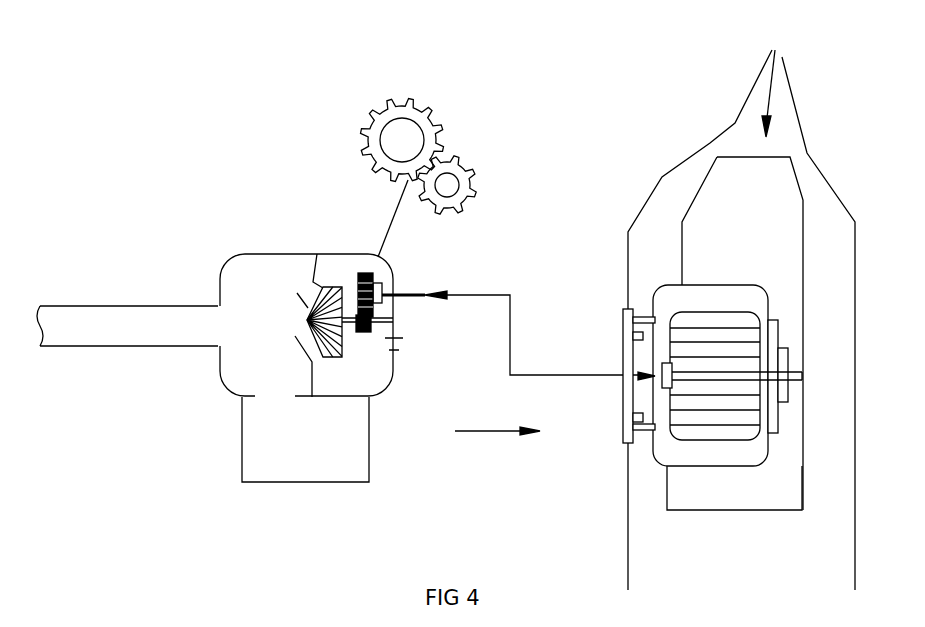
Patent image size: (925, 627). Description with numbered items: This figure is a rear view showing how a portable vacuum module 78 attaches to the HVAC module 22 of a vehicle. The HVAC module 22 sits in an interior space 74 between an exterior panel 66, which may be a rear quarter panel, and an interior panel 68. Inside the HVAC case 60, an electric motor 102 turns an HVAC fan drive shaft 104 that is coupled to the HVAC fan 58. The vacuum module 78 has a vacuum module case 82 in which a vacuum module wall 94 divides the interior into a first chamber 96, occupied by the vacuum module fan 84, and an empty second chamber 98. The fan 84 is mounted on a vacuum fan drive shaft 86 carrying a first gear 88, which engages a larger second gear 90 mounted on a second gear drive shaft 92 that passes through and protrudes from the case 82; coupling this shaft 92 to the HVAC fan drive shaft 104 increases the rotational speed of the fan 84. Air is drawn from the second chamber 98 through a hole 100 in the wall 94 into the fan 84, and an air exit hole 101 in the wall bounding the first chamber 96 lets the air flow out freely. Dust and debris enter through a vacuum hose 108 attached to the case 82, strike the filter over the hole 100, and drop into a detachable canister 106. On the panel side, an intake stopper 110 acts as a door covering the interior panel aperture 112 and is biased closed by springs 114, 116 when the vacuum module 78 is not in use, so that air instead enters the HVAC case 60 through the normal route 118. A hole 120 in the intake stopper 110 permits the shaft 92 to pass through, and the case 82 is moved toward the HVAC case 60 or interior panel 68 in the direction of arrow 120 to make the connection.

The HVAC module 22 is at (780, 45).
The HVAC fan 58 is at (751, 312).
The HVAC case 60 is at (803, 480).
The exterior panel 66 is at (792, 85).
The interior panel 68 is at (710, 143).
The interior space 74 is at (754, 585).
The vacuum module 78 is at (310, 170).
The vacuum module case 82 is at (226, 262).
The vacuum module fan 84 is at (350, 277).
The vacuum fan drive shaft 86 is at (395, 323).
The first gear 88 is at (458, 163).
The second gear 90 is at (400, 100).
The second gear drive shaft 92 is at (412, 292).
The vacuum module wall 94 is at (308, 293).
The first chamber 96 is at (362, 393).
The second chamber 98 is at (274, 375).
The hole 100 is at (300, 320).
The air exit hole 101 is at (395, 342).
The electric motor 102 is at (788, 350).
The HVAC fan drive shaft 104 is at (790, 403).
The detachable canister 106 is at (369, 440).
The vacuum hose 108 is at (147, 305).
The intake stopper 110 is at (622, 395).
The interior panel aperture 112 is at (637, 433).
The spring 114 is at (647, 317).
The spring 116 is at (643, 437).
The route 118 is at (651, 482).
The arrow / hole in intake stopper 120 is at (497, 430).